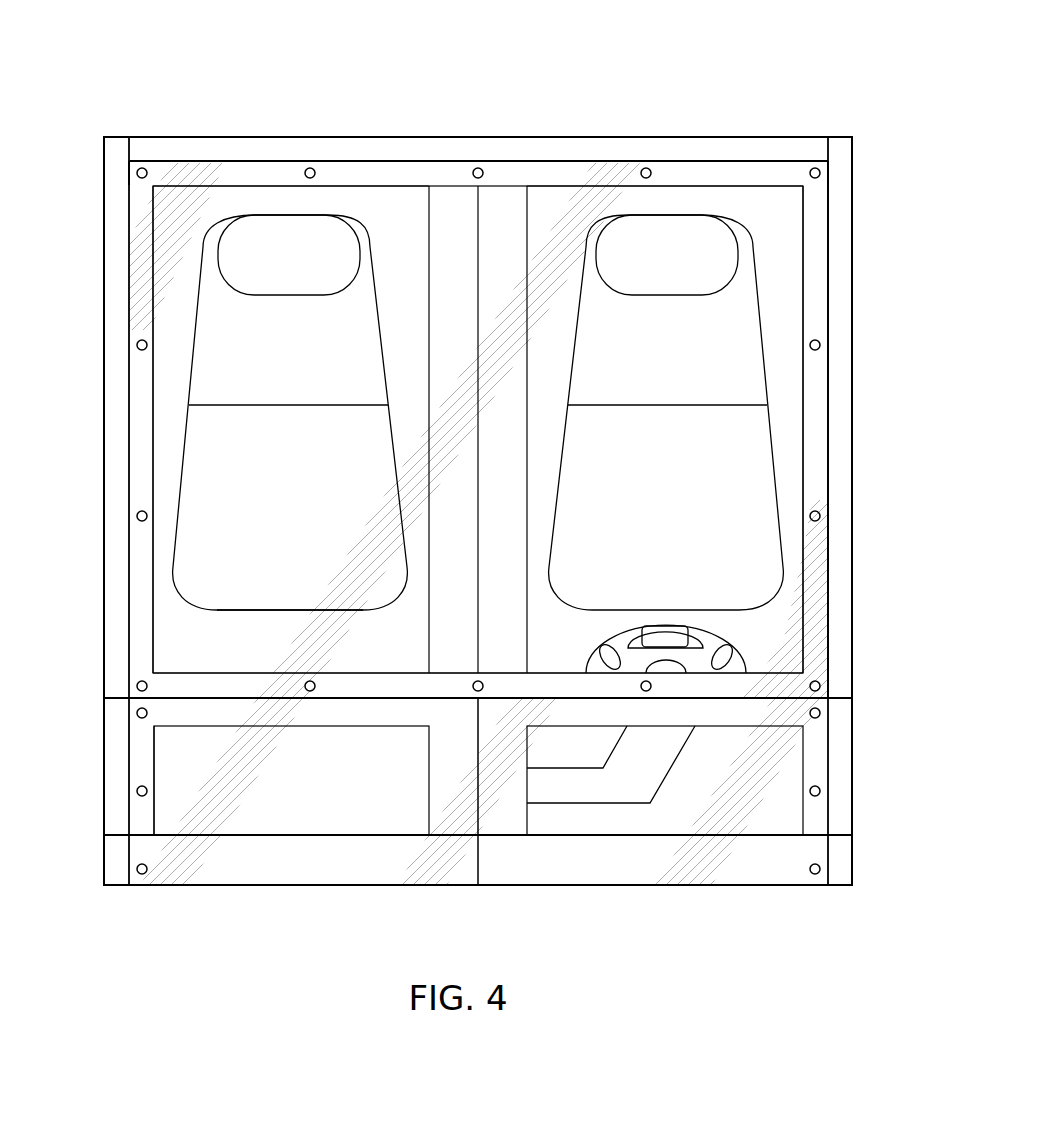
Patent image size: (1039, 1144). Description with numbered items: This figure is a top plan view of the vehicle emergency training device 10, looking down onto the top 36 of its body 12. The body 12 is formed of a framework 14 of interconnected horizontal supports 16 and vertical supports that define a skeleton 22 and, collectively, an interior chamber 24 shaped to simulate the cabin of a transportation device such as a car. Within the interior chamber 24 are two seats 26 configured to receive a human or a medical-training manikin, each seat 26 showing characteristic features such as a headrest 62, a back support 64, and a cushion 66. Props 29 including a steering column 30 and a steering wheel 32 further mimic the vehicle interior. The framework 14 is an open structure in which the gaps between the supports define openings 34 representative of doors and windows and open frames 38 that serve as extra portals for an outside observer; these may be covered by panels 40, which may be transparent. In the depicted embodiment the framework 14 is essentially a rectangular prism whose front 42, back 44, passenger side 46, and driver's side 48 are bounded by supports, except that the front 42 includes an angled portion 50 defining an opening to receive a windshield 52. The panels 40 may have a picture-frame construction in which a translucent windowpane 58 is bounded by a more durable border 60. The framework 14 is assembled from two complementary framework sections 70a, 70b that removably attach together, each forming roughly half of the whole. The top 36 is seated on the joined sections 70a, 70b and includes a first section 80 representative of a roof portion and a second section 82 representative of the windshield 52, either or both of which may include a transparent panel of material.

The vehicle emergency training device 10 is at (486, 449).
The body 12 is at (845, 522).
The framework 14 is at (845, 258).
The horizontal supports 16 is at (118, 582).
The skeleton 22 is at (118, 395).
The interior chamber 24 is at (180, 248).
The seat 26 is at (753, 480).
The props 29 is at (663, 742).
The steering column 30 is at (640, 782).
The steering wheel 32 is at (730, 648).
The openings 34 is at (162, 655).
The top 36 is at (162, 458).
The open frames 38 is at (692, 195).
The panels 40 is at (752, 630).
The front 42 is at (357, 885).
The back 44 is at (452, 137).
The passenger side 46 is at (105, 256).
The driver's side 48 is at (852, 215).
The angled portion 50 is at (102, 785).
The windshield 52 is at (240, 827).
The windowpane 58 is at (285, 195).
The border 60 is at (230, 175).
The headrest 62 is at (335, 228).
The back support 64 is at (358, 313).
The cushion 66 is at (258, 603).
The framework section 70a is at (110, 170).
The framework section 70b is at (845, 167).
The first section 80 is at (665, 429).
The second section 82 is at (291, 780).